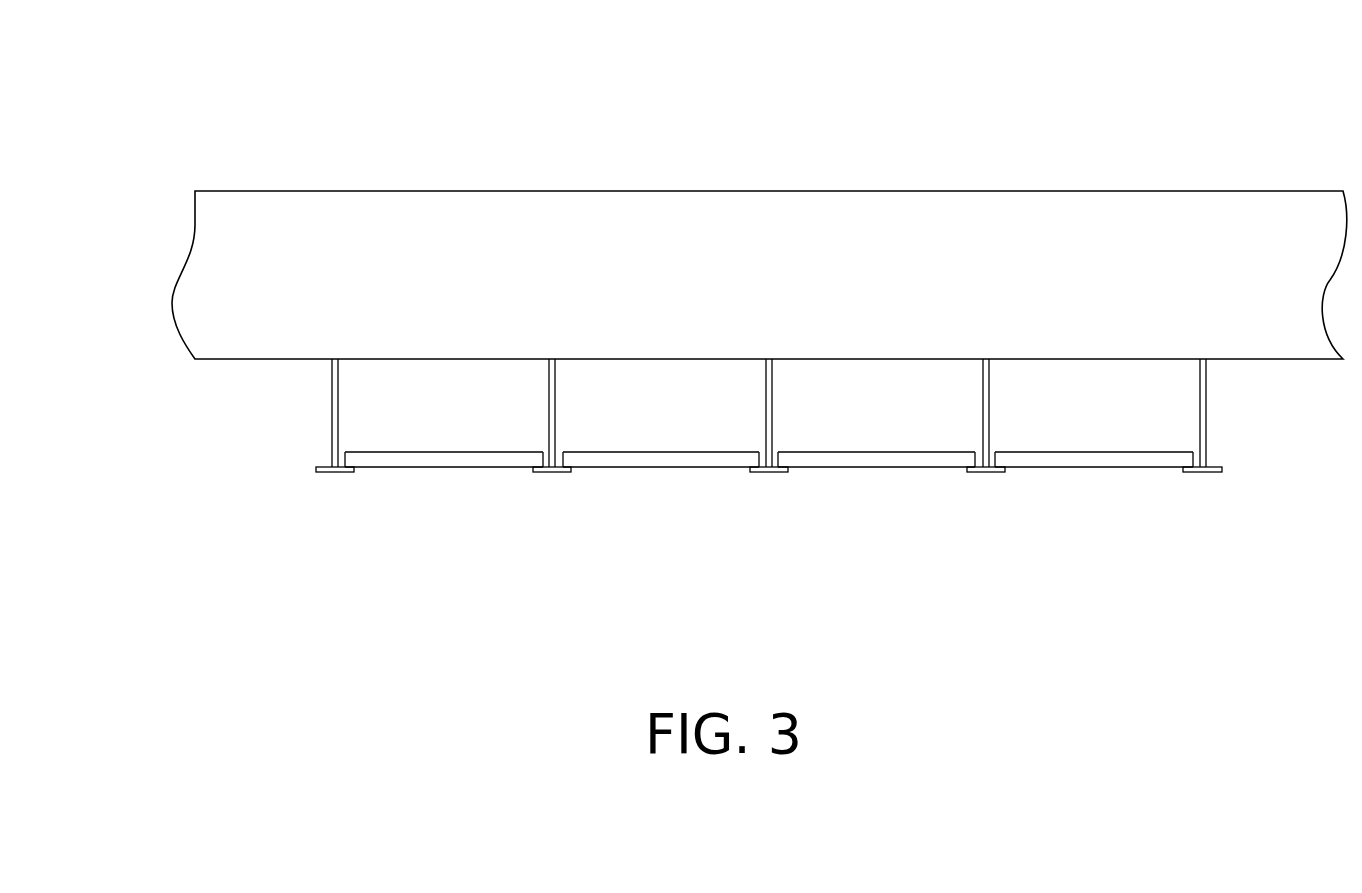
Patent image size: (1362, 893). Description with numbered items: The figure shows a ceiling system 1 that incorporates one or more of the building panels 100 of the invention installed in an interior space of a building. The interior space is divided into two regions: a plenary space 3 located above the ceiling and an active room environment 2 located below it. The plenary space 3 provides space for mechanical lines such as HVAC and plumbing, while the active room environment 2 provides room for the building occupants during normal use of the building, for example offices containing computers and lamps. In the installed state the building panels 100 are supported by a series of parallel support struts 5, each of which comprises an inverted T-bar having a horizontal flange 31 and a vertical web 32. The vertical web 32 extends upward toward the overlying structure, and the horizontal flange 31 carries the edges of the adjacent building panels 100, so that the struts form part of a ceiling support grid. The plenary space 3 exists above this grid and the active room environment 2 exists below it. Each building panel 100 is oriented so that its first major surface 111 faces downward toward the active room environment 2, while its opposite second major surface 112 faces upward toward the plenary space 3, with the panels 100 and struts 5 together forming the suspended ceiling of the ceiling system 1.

The ceiling system 1 is at (175, 155).
The active room environment 2 is at (726, 551).
The plenary space 3 is at (694, 477).
The support strut 5 is at (331, 382).
The horizontal flange 31 is at (332, 473).
The vertical web 32 is at (331, 443).
The building panel 100 is at (455, 460).
The first major surface 111 is at (508, 468).
The second major surface 112 is at (429, 452).